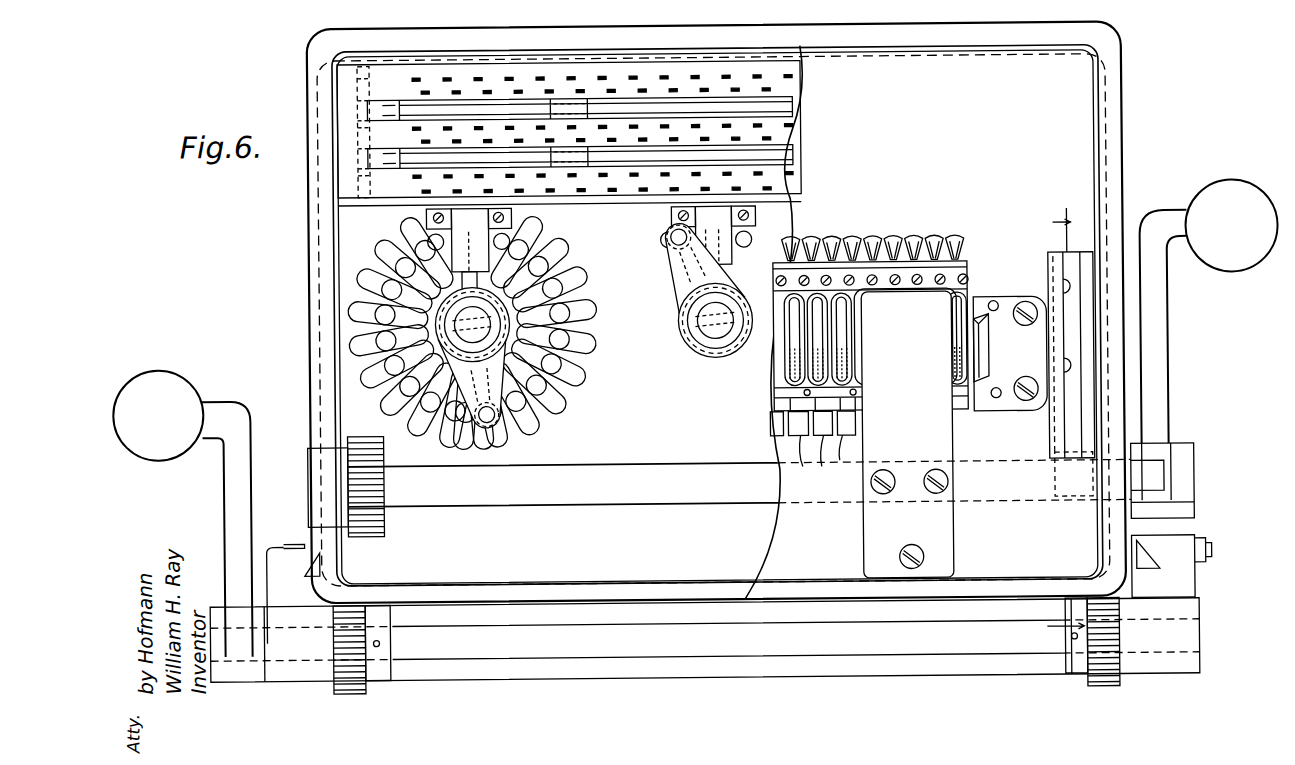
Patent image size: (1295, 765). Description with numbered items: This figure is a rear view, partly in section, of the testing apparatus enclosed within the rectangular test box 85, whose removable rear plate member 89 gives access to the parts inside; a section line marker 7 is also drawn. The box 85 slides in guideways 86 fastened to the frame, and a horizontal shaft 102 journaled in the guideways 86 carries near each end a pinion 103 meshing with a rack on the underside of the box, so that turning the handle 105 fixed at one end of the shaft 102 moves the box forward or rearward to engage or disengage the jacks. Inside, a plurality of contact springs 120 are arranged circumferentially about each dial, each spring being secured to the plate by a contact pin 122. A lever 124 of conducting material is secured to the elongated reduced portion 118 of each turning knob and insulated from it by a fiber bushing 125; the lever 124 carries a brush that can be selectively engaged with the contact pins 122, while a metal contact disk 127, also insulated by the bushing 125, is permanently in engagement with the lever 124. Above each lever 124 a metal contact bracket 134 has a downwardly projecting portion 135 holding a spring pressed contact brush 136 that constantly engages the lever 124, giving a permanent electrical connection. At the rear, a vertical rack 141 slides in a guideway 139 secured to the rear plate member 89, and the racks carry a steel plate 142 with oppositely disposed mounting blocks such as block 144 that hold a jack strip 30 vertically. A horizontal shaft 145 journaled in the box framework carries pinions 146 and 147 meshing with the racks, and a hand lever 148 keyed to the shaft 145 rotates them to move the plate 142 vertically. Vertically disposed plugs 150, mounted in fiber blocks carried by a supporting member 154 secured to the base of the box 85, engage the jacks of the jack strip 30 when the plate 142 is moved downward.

The box 85 is at (1138, 146).
The rear plate member 89 is at (860, 321).
The jack strip 30 is at (871, 272).
The guideway 139 is at (1062, 259).
The section line 7- 7 is at (1061, 441).
The steel plate 142 is at (980, 282).
The mounting block 144 is at (1018, 291).
The rack 141 is at (1071, 327).
The hand lever 148 is at (1166, 362).
The supporting member 154 is at (1006, 439).
The pinion 147 is at (1060, 509).
The plugs 150 is at (821, 465).
The shaft 145 is at (666, 499).
The pinion 146 is at (383, 536).
The guideways 86 is at (273, 542).
The handle 105 is at (238, 466).
The horizontal shaft 102 is at (532, 649).
The pinion 103 is at (360, 689).
The downwardly projecting portion 135 is at (446, 235).
The metal contact bracket 134 is at (487, 222).
The spring pressed contact brush 136 is at (498, 263).
The metal contact disk 127 is at (401, 246).
The contact pin 122 is at (648, 258).
The lever 124 is at (690, 235).
The elongated reduced portion 118 is at (420, 369).
The fiber bushing 125 is at (462, 337).
The contact springs 120 is at (626, 410).